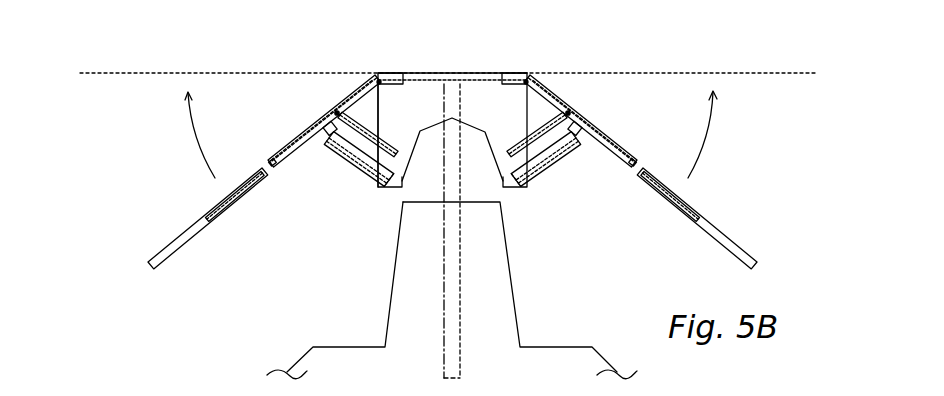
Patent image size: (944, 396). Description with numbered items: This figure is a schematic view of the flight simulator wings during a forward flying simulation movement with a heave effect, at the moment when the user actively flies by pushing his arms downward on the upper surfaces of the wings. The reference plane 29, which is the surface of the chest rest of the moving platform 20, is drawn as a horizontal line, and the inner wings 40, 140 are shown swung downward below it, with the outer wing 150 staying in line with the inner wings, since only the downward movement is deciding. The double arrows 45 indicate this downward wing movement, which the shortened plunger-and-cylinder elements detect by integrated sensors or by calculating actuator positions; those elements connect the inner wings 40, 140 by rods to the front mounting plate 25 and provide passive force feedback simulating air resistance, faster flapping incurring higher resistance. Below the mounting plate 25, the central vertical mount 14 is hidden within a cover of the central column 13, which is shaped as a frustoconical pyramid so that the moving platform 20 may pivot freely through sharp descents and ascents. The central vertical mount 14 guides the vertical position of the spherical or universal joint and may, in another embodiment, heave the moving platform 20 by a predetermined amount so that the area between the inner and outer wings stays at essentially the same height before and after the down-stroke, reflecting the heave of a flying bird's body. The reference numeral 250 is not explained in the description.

The central column 13 is at (505, 317).
The central vertical mount 14 is at (453, 185).
The moving platform 20 is at (468, 80).
The front mounting plate 25 is at (507, 108).
The reference plane 29 is at (188, 72).
The inner wing 40 is at (283, 158).
The double arrows 45 is at (193, 130).
The inner wing 140 is at (603, 133).
The outer wing 150 is at (693, 207).
The arm end segment 250 is at (184, 241).